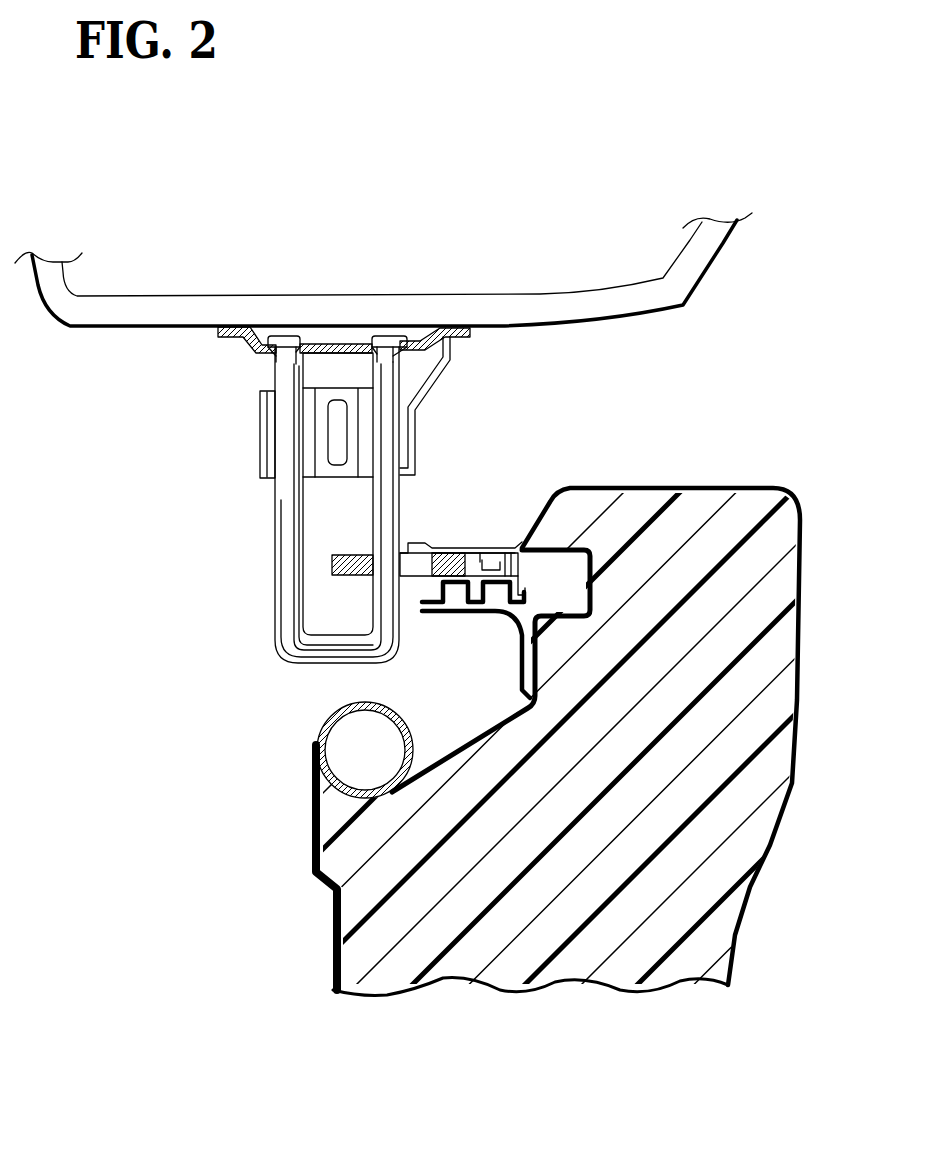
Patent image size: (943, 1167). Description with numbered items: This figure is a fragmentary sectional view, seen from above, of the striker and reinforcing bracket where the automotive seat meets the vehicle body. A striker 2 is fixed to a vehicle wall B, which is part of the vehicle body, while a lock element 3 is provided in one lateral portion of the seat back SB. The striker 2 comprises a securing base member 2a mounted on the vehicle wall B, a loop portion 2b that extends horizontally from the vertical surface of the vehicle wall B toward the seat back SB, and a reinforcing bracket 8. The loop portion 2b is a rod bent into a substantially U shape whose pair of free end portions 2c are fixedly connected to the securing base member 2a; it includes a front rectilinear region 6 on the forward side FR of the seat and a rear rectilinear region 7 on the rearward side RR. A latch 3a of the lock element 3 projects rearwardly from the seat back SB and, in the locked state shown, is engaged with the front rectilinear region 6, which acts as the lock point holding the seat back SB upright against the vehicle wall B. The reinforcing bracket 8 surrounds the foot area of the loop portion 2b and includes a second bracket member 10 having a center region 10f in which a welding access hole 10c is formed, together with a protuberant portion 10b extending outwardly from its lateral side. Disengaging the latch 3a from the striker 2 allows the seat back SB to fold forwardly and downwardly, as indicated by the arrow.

The vehicle wall B is at (566, 302).
The striker 2 is at (275, 568).
The securing base member 2a is at (247, 333).
The loop portion 2b is at (280, 528).
The free end portions 2c is at (383, 358).
The lock element 3 is at (496, 545).
The latch 3a is at (438, 548).
The front rectilinear region 6 is at (390, 495).
The rear rectilinear region 7 is at (283, 607).
The reinforcing bracket 8 is at (260, 430).
The second bracket member 10 is at (272, 460).
The protuberant portion 10b is at (447, 366).
The welding access hole 10c is at (339, 412).
The center region 10f is at (323, 468).
The seat back SB is at (769, 487).
The rearward side RR is at (510, 378).
The forward side FR is at (824, 971).